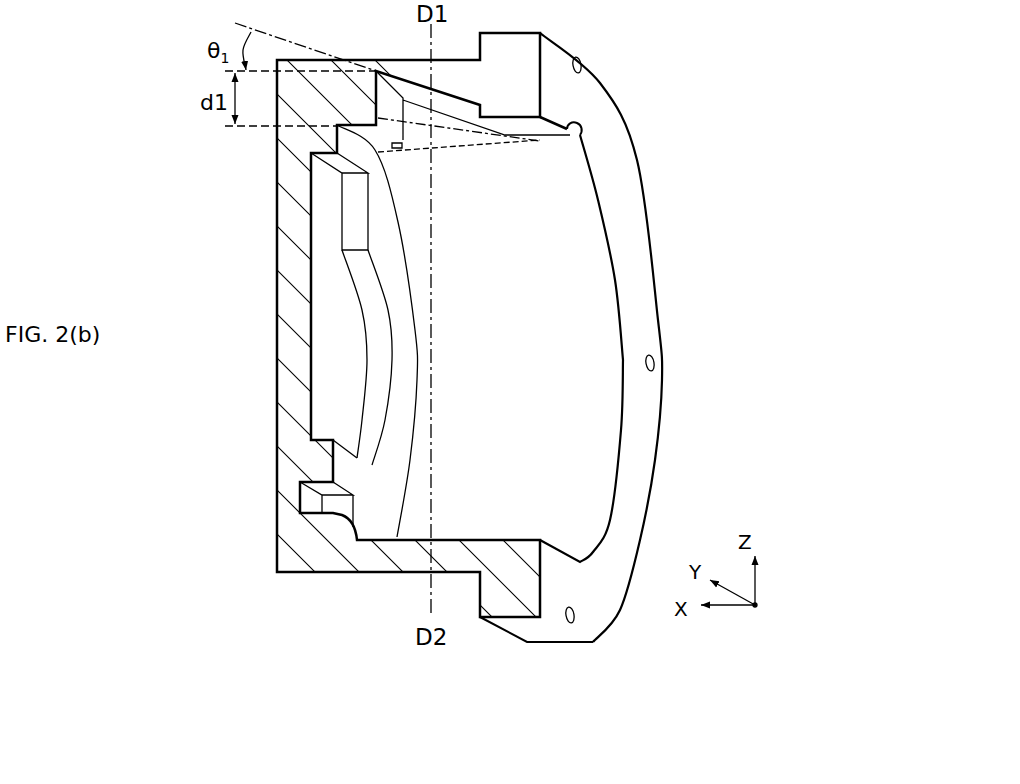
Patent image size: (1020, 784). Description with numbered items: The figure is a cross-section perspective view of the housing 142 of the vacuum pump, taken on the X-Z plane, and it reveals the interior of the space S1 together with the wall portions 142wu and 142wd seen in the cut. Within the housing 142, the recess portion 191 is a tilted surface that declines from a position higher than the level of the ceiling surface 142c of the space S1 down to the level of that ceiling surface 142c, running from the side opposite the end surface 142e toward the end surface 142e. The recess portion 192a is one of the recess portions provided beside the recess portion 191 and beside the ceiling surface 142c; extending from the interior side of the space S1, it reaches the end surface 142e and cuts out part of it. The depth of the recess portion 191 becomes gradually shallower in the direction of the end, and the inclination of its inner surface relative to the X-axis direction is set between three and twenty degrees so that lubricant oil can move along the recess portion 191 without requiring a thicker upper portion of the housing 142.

The housing 142 is at (290, 460).
The ceiling surface 142c is at (526, 128).
The upper wall portion of holder 142wu is at (567, 318).
The lower wall portion of holder 142wd is at (568, 452).
The end surface 142e is at (642, 323).
The recess portion 191 is at (395, 113).
The recess portion 192a is at (457, 125).
The space S1 is at (525, 516).